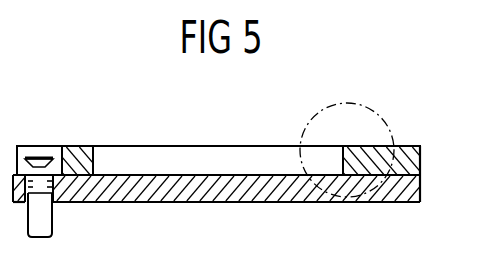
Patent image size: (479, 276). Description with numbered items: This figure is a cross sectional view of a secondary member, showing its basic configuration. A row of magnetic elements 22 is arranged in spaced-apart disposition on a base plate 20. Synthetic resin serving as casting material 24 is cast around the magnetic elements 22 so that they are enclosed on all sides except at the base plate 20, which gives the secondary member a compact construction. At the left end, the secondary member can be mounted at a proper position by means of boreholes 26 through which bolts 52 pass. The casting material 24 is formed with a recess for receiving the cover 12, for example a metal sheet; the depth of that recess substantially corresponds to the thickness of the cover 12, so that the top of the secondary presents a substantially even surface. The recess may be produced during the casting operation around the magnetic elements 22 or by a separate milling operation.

The cover 12 is at (167, 146).
The base plate 20 is at (222, 193).
The magnetic elements 22 is at (268, 157).
The casting material 24 is at (408, 158).
The boreholes 26 is at (38, 152).
The bolts 52 is at (45, 220).